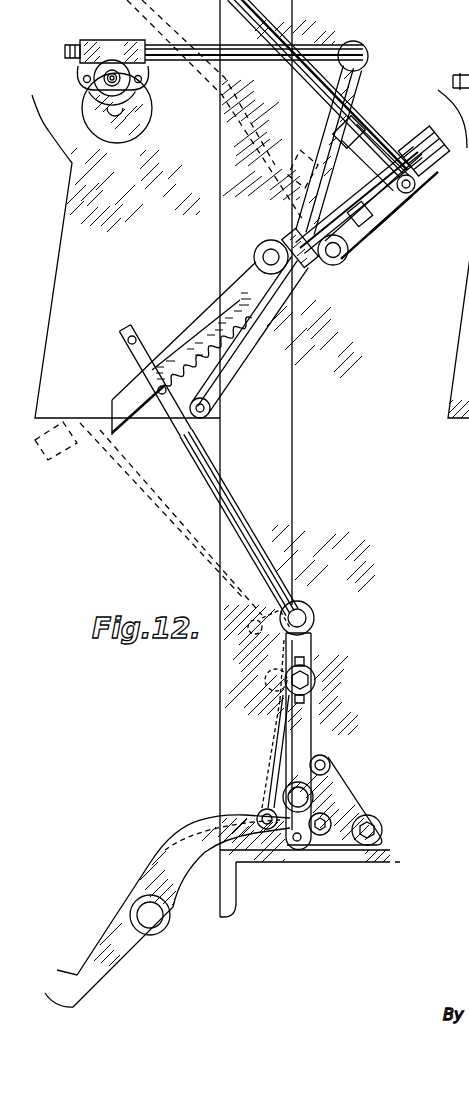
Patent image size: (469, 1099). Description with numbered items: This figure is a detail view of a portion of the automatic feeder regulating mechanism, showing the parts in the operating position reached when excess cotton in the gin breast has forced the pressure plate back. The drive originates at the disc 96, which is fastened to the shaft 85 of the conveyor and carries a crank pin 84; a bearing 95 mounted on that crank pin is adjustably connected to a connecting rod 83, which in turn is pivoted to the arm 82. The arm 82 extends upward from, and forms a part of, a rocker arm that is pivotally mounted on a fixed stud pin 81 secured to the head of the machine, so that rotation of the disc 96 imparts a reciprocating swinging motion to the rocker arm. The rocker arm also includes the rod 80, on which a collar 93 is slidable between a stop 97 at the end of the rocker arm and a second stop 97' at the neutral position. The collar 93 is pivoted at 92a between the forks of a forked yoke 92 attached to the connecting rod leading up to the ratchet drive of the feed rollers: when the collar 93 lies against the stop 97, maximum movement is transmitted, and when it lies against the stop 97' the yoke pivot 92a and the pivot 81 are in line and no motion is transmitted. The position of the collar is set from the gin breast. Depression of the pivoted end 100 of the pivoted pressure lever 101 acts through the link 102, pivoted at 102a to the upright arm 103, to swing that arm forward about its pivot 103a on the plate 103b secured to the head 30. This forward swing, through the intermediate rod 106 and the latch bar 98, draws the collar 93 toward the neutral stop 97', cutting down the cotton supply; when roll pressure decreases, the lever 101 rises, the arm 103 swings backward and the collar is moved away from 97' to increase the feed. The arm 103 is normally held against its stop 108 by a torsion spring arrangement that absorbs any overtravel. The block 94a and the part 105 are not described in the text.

The bearing 95 is at (103, 43).
The crank pin 84 is at (130, 92).
The shaft of the conveyor 85 is at (112, 117).
The disc 96 is at (128, 140).
The connecting rod 83 is at (303, 62).
The arm 82 is at (357, 87).
The forked yoke 92 is at (372, 145).
The stop 97 is at (372, 182).
The nut block 94a is at (436, 163).
The collar 93 is at (416, 187).
The yoke pivot 92a is at (406, 196).
The rod 80 is at (364, 229).
The fixed stud pin 81 is at (334, 266).
The stop 97' is at (286, 244).
The latch bar 98 is at (195, 338).
The intermediate rod 106 is at (207, 459).
The stop 108 is at (275, 613).
The pivot 102a is at (315, 678).
The upright arm 103 is at (306, 740).
The link 102 is at (272, 780).
The pivoted end 100 is at (258, 814).
The pivoted pressure lever 101 is at (160, 860).
The pivot 103a is at (305, 798).
The plate 103b is at (372, 808).
The head 30 is at (390, 851).
The lower end pin 105 is at (305, 848).